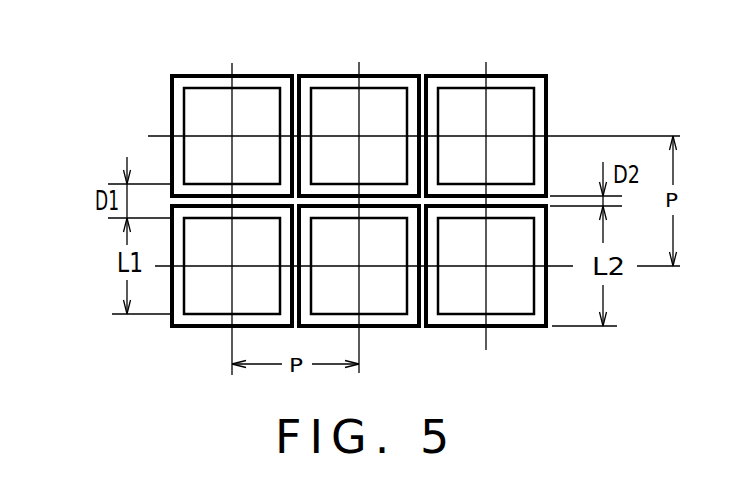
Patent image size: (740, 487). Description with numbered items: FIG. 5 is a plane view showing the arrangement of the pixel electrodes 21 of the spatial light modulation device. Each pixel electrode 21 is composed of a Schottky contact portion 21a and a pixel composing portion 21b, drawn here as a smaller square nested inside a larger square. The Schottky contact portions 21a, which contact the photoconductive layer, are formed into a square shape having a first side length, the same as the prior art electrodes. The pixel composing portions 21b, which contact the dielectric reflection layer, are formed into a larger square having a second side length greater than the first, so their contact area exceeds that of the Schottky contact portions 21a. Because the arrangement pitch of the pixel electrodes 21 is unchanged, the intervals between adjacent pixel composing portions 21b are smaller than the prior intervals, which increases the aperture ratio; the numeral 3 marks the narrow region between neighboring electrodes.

The pixel electrode 21 is at (93, 57).
The Schottky contact portion 21a is at (207, 101).
The pixel composing portion 21b is at (177, 121).
The gap between electrodes 3 is at (295, 93).